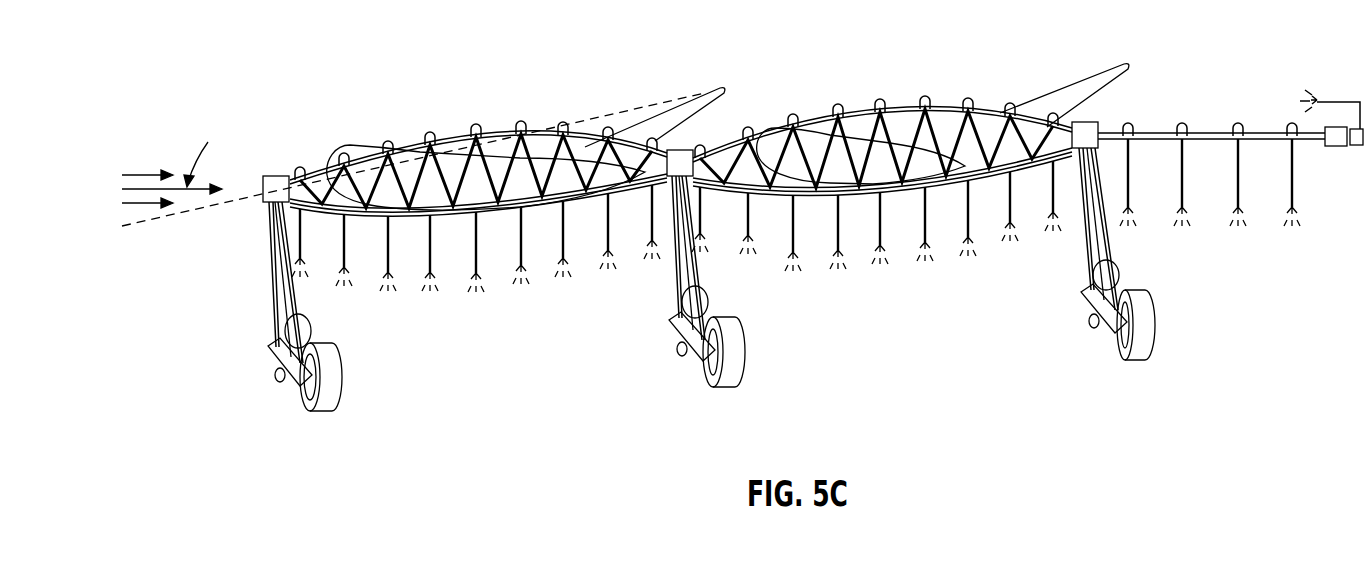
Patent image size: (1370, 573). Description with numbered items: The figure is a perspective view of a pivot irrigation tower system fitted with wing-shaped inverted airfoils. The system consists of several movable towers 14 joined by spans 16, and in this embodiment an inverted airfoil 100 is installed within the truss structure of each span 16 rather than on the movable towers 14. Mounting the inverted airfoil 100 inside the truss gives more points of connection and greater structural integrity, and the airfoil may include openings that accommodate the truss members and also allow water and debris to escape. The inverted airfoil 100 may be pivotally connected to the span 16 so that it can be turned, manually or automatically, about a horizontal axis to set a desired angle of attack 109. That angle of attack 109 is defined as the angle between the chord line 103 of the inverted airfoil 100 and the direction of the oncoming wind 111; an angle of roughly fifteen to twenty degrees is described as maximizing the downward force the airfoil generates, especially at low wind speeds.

The movable tower 14 is at (246, 357).
The span 16 is at (486, 320).
The inverted airfoil 100 is at (488, 152).
The chord line 103 is at (647, 105).
The angle of attack 109 is at (221, 254).
The oncoming wind 111 is at (151, 173).